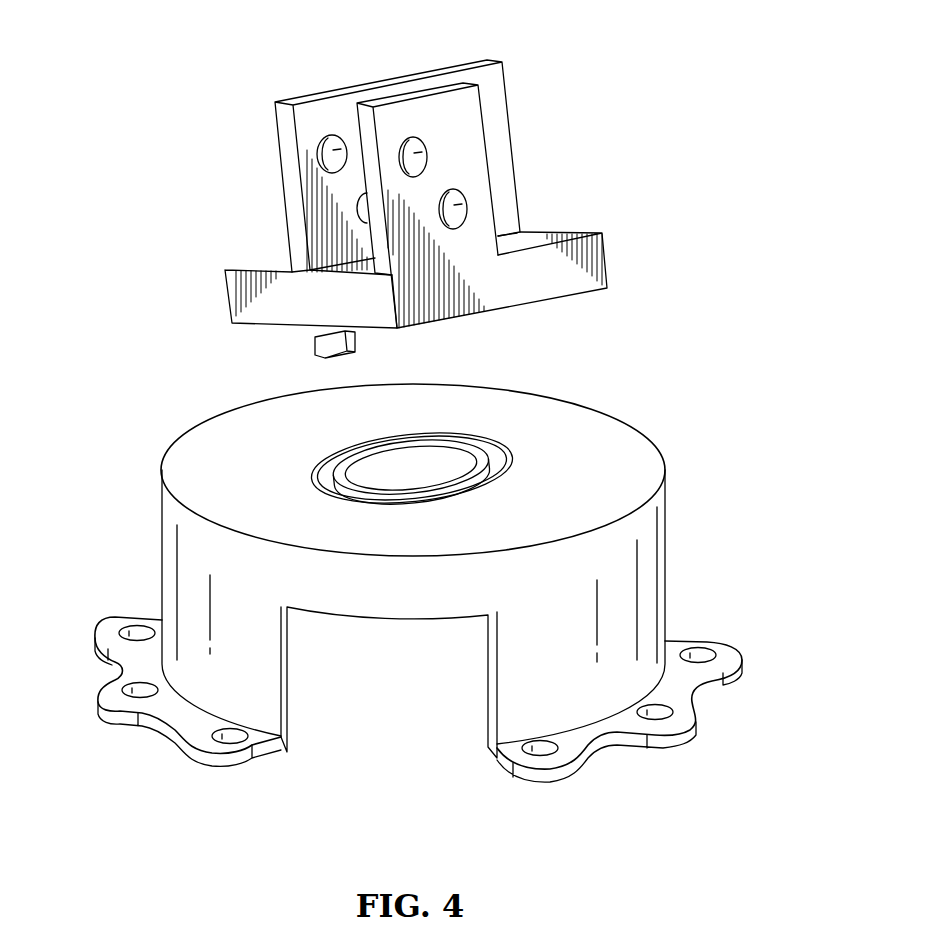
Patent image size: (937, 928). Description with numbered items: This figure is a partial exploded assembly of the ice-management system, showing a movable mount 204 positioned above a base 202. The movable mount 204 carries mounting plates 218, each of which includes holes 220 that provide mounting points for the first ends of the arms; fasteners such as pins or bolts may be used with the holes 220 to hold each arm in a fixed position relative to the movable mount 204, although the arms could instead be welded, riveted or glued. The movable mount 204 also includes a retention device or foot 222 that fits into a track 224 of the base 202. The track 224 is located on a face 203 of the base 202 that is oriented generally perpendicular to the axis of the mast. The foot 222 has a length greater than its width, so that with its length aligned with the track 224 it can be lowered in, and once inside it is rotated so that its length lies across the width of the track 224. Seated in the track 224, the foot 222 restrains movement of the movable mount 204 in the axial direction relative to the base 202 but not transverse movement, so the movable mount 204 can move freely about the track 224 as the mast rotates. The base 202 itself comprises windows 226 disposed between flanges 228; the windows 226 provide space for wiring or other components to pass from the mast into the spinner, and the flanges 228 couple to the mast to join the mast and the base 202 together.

The base 202 is at (755, 565).
The face 203 is at (213, 430).
The movable mount 204 is at (639, 147).
The mounting plate 218 is at (428, 115).
The holes 220 is at (423, 163).
The foot 222 is at (310, 348).
The track 224 is at (327, 458).
The windows 226 is at (390, 755).
The flanges 228 is at (110, 716).